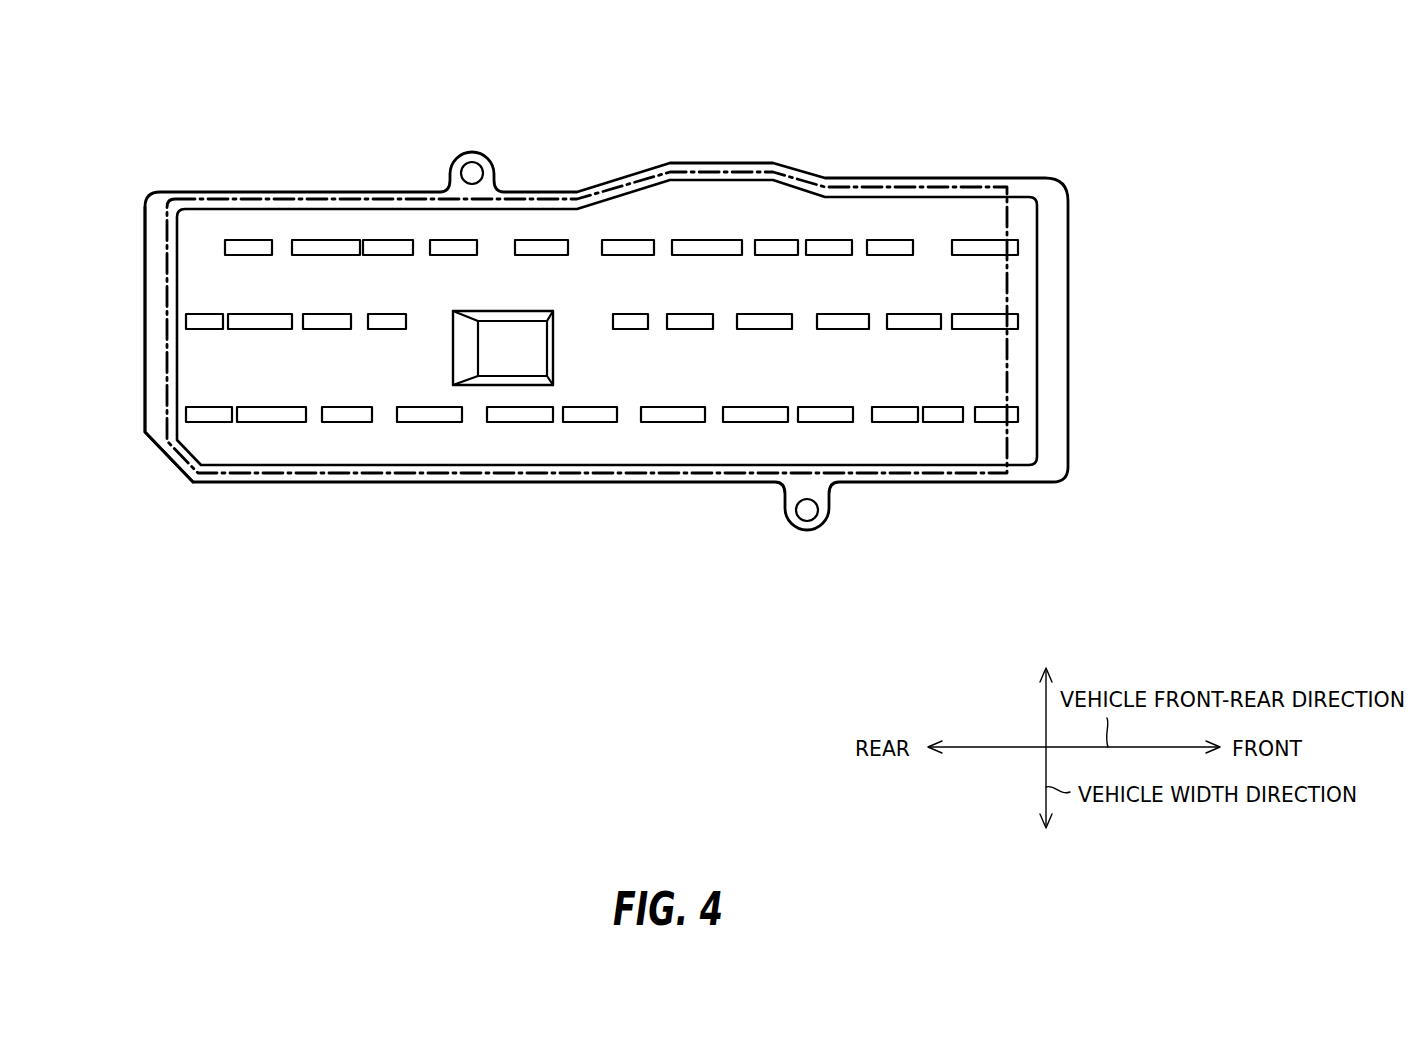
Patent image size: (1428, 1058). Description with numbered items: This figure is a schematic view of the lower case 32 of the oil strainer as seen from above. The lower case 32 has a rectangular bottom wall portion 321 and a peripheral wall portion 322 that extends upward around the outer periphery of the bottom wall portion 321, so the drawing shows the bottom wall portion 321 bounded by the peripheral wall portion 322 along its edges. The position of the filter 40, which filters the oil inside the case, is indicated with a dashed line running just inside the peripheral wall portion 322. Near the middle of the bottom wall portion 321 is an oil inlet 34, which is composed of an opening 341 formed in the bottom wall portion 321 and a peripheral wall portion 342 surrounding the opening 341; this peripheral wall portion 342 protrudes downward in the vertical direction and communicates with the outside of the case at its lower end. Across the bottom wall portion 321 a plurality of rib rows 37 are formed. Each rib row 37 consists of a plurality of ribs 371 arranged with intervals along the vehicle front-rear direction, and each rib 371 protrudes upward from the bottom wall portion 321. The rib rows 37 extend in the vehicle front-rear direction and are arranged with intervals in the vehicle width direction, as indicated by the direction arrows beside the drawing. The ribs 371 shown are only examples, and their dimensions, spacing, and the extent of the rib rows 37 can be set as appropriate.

The lower case 32 is at (1088, 135).
The bottom wall portion 321 is at (532, 228).
The peripheral wall portion 322 is at (157, 352).
The filter 40 is at (352, 215).
The rib rows 37 is at (656, 416).
The ribs 371 is at (264, 314).
The inlet 34 is at (521, 321).
The opening 341 is at (548, 337).
The peripheral wall portion 342 is at (465, 352).